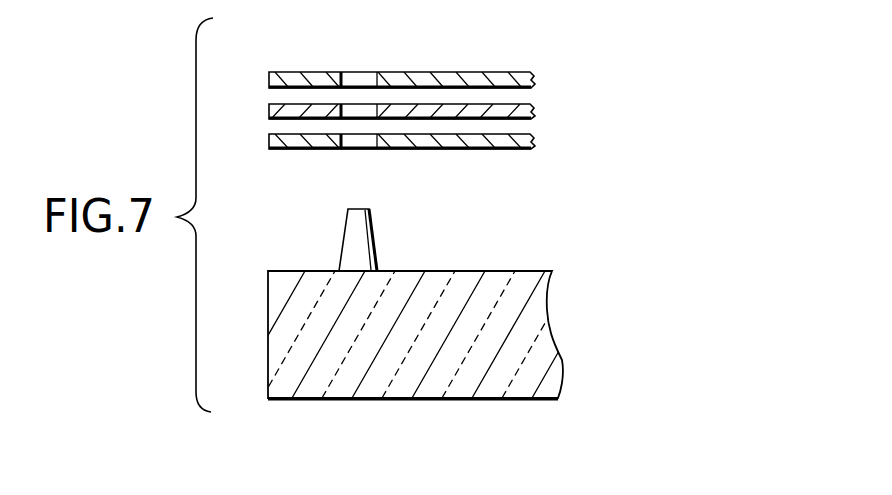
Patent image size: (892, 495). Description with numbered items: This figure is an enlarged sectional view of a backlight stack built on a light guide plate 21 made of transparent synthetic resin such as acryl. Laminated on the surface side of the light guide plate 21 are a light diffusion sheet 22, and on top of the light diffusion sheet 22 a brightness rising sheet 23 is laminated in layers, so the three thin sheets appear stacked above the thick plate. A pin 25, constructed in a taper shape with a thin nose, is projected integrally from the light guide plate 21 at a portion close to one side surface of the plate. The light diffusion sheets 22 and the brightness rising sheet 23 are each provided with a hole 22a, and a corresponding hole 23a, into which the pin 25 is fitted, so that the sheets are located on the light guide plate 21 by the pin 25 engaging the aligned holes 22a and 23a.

The light guide plate 21 is at (576, 322).
The light diffusion sheet 22 is at (436, 101).
The hole 22a is at (372, 140).
The brightness rising sheet 23 is at (482, 64).
The top plate hole 23a is at (367, 79).
The pin 25 is at (341, 260).